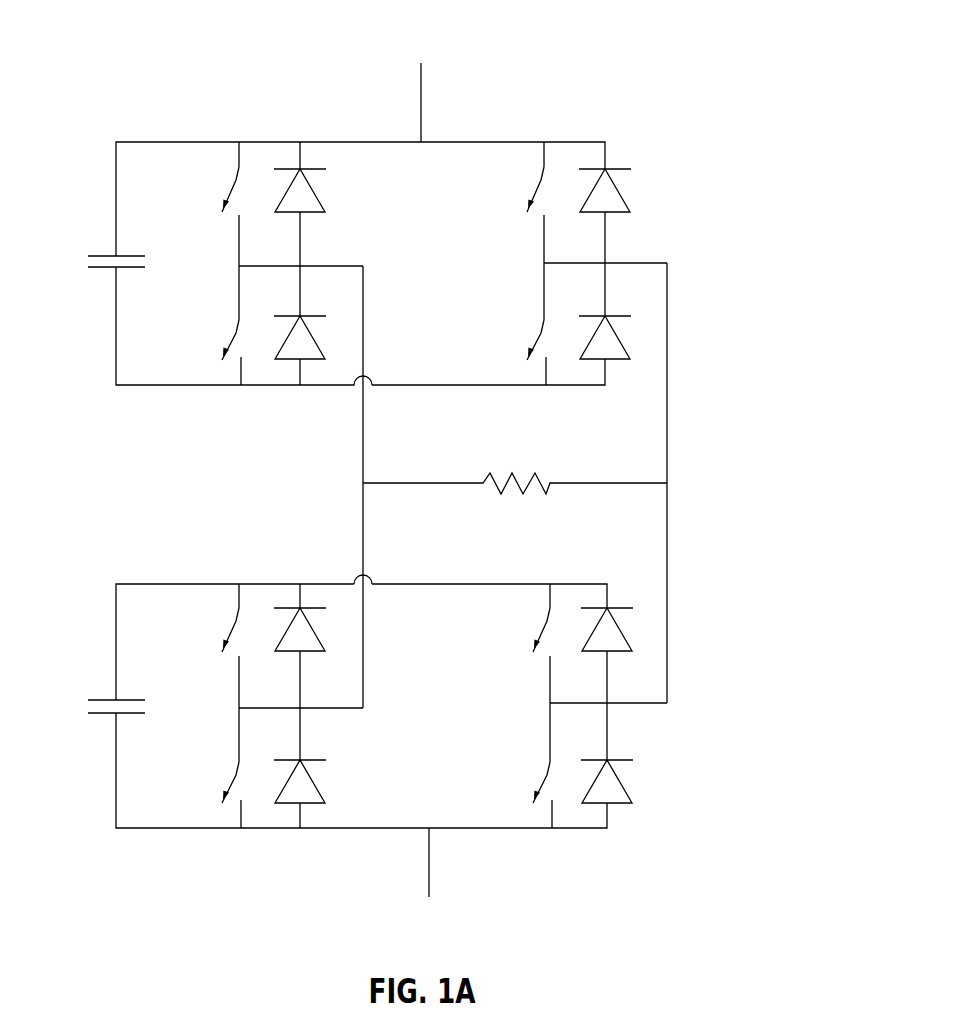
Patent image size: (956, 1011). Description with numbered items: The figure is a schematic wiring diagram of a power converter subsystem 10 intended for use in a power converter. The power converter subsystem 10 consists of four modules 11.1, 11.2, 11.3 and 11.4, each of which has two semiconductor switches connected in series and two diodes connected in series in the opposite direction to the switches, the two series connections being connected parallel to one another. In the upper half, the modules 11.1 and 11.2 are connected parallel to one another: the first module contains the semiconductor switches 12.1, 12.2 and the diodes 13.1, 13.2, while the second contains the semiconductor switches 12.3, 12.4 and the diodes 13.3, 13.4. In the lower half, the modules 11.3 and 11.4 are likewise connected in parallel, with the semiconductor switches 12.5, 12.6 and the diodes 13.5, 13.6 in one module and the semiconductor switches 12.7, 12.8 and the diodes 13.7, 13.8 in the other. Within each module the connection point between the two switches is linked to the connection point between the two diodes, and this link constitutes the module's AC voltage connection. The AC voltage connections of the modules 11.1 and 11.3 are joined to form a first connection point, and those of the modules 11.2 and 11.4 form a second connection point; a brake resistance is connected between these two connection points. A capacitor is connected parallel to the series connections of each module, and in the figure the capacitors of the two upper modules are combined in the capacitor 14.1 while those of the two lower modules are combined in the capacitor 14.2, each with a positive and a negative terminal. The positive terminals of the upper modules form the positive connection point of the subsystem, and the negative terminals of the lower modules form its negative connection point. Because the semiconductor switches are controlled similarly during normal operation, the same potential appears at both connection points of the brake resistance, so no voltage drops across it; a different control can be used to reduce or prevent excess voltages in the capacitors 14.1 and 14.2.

The power converter subsystem 10 is at (758, 800).
The module 11.1 is at (212, 117).
The module 11.2 is at (535, 113).
The module 11.3 is at (275, 837).
The module 11.4 is at (557, 847).
The semiconductor switch 12.1 is at (203, 204).
The semiconductor switch 12.2 is at (204, 325).
The semiconductor switch 12.3 is at (510, 202).
The semiconductor switch 12.4 is at (511, 324).
The semiconductor switch 12.5 is at (209, 646).
The semiconductor switch 12.6 is at (210, 768).
The semiconductor switch 12.7 is at (519, 643).
The semiconductor switch 12.8 is at (520, 765).
The diode 13.1 is at (320, 189).
The diode 13.2 is at (319, 336).
The diode 13.3 is at (625, 189).
The diode 13.4 is at (624, 336).
The diode 13.5 is at (314, 629).
The diode 13.6 is at (321, 779).
The diode 13.7 is at (621, 628).
The diode 13.8 is at (629, 778).
The capacitor 14.1 is at (93, 265).
The capacitor 14.2 is at (93, 707).